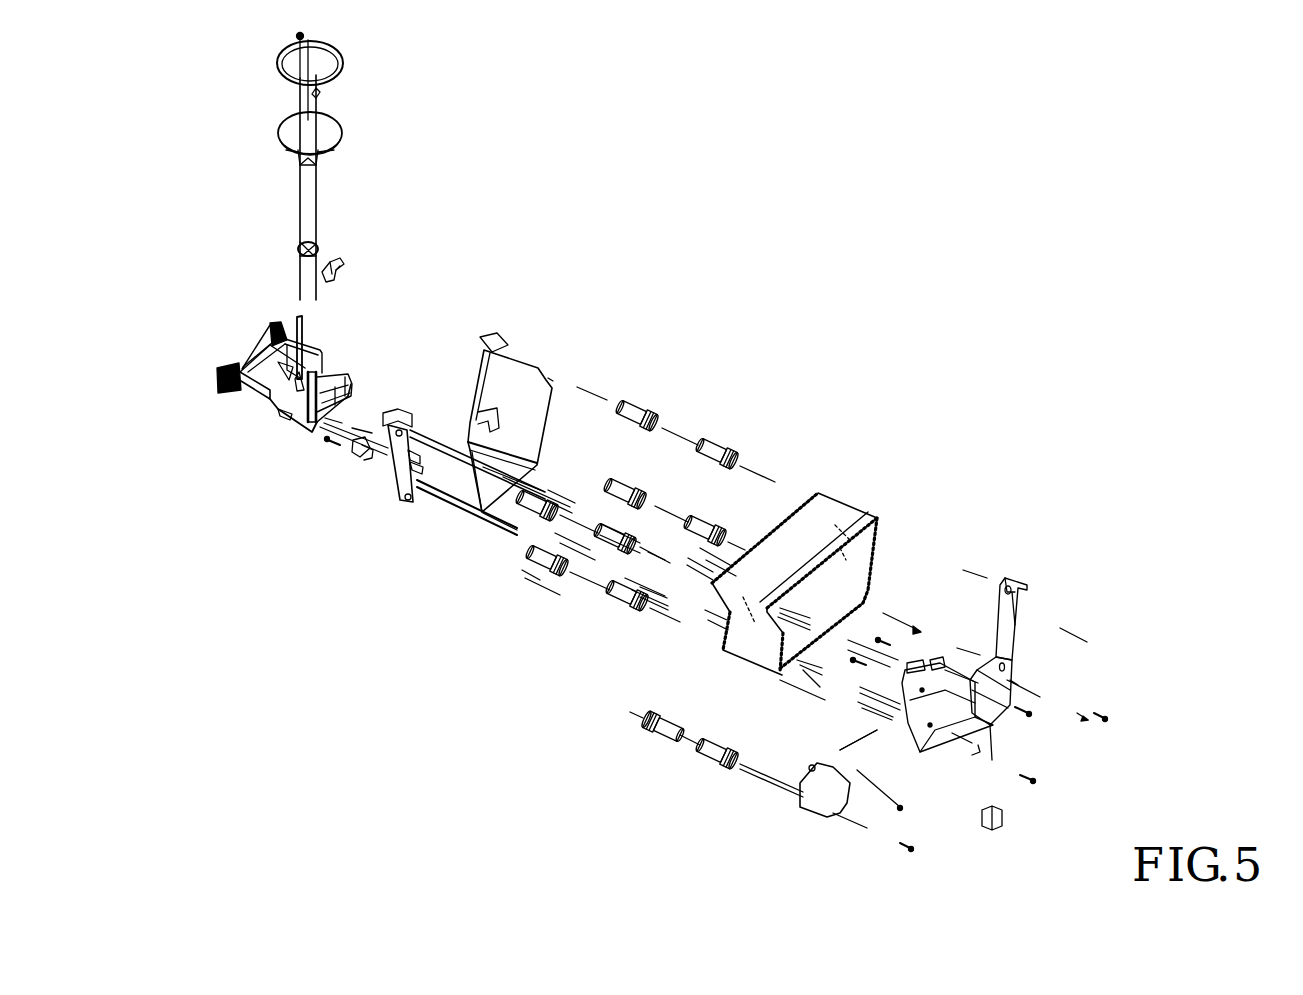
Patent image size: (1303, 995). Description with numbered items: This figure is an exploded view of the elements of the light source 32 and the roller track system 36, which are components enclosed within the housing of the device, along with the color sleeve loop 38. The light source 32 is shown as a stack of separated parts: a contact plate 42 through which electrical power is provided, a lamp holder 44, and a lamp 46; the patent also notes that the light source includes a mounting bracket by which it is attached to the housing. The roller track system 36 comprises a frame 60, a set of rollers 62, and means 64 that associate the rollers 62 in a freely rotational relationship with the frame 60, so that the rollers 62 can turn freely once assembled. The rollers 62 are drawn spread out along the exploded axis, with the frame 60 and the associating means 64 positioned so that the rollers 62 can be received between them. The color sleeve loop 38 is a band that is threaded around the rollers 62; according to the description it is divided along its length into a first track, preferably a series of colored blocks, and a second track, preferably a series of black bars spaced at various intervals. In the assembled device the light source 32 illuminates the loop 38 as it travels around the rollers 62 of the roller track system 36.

The light source 32 is at (274, 167).
The roller track system 36 is at (350, 620).
The color sleeve loop 38 is at (828, 492).
The contact plate 42 is at (318, 250).
The lamp holder 44 is at (282, 72).
The lamp 46 is at (332, 130).
The frame 60 is at (462, 486).
The rollers 62 is at (612, 600).
The means to associate rollers with frame 64 is at (400, 482).